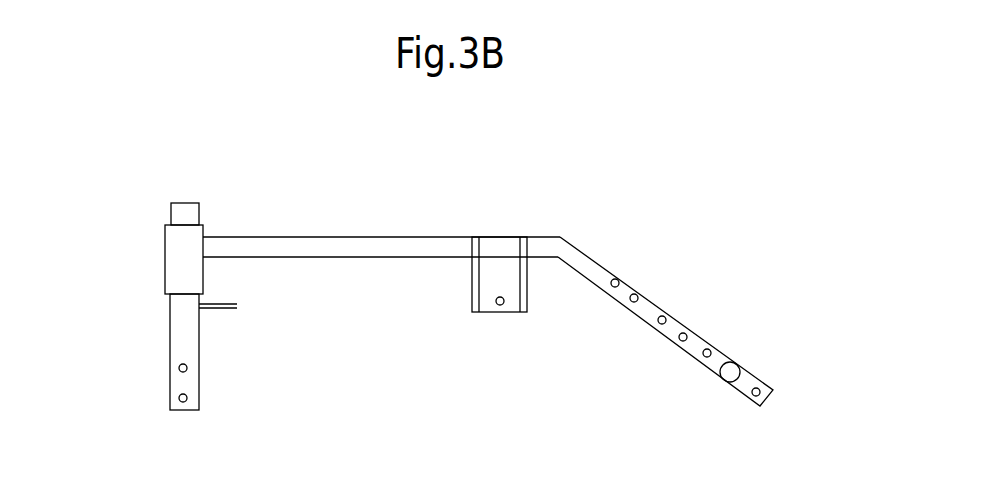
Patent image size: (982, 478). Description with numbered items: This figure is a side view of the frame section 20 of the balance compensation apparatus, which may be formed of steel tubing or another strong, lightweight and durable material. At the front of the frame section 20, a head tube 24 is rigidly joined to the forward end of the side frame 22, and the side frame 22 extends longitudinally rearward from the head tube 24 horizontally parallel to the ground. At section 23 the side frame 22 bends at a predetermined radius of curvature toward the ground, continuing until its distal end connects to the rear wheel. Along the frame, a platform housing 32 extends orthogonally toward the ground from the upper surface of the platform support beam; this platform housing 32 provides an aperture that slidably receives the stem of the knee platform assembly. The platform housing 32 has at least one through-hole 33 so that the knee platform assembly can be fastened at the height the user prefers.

The frame section 20 is at (377, 202).
The side frame 22 is at (305, 240).
The section 23 is at (557, 233).
The head tube 24 is at (182, 255).
The platform housing 32 is at (470, 290).
The through-hole 33 is at (502, 305).